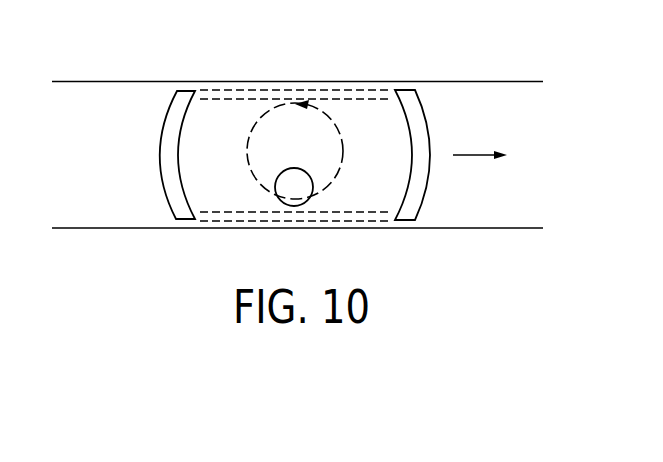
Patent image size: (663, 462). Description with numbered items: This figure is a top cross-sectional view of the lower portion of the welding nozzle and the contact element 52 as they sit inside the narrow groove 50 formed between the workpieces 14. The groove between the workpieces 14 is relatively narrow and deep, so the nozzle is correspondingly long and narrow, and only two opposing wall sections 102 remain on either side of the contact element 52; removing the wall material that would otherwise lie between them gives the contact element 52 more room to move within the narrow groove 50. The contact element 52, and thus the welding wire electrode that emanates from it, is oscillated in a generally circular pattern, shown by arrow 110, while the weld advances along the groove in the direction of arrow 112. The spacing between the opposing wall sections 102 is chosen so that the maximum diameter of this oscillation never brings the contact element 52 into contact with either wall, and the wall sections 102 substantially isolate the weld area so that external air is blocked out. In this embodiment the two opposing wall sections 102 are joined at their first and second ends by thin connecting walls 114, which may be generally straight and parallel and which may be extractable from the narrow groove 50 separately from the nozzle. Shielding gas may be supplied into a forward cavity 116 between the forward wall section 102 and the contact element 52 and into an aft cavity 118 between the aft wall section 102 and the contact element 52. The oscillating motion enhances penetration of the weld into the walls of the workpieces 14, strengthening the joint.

The workpieces 14 is at (307, 65).
The narrow groove 50 is at (495, 90).
The contact element 52 is at (303, 198).
The opposing wall sections 102 is at (169, 143).
The arrow 110 is at (332, 123).
The arrow 112 is at (473, 155).
The thin connecting walls 114 is at (228, 94).
The forward cavity 116 is at (395, 135).
The aft cavity 118 is at (232, 136).